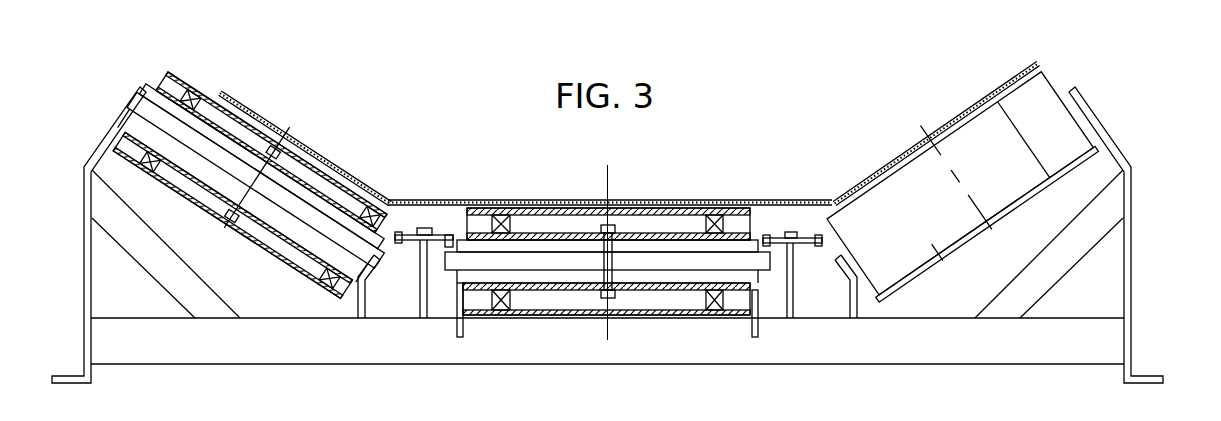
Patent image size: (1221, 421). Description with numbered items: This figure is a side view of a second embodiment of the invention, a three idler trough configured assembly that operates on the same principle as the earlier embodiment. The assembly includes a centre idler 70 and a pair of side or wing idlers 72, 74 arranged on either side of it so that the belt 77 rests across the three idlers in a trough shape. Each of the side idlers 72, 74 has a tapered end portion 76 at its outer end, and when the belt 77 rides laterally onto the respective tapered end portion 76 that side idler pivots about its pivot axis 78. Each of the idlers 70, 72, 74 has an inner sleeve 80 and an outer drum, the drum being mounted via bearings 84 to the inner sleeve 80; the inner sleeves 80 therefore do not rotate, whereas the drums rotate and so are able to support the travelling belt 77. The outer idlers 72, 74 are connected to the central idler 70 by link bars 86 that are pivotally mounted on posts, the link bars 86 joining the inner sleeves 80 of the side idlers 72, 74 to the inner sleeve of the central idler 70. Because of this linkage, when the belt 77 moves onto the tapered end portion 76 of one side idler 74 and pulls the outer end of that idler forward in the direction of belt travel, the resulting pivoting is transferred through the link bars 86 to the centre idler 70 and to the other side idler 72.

The centre idler 70 is at (544, 214).
The side idler 72 is at (307, 172).
The side idler 74 is at (935, 250).
The tapered end portion 76 is at (171, 187).
The belt 77 is at (382, 206).
The pivot axis 78 is at (294, 128).
The inner sleeve 80 is at (580, 290).
The bearing 84 is at (312, 275).
The link bar 86 is at (432, 232).